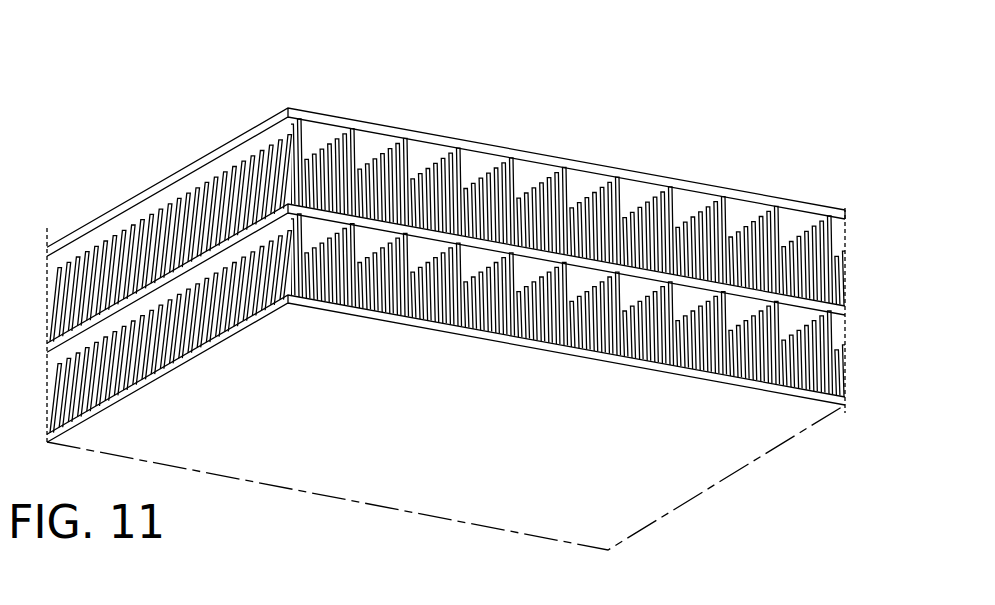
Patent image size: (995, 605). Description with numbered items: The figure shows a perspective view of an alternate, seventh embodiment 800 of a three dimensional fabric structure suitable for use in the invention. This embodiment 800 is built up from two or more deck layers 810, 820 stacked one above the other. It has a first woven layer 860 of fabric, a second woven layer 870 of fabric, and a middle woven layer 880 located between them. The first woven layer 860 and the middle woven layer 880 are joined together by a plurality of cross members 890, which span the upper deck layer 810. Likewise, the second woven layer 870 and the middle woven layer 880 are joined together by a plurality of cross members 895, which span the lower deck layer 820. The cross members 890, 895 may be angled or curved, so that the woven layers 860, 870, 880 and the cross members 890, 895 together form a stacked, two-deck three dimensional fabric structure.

The seventh embodiment of the three dimensional structure 800 is at (484, 289).
The deck layer 810 is at (586, 183).
The deck layer 820 is at (832, 343).
The first woven layer 860 is at (407, 165).
The second woven layer 870 is at (463, 338).
The middle woven layer 880 is at (618, 217).
The cross members 890 is at (513, 187).
The cross members 895 is at (300, 245).